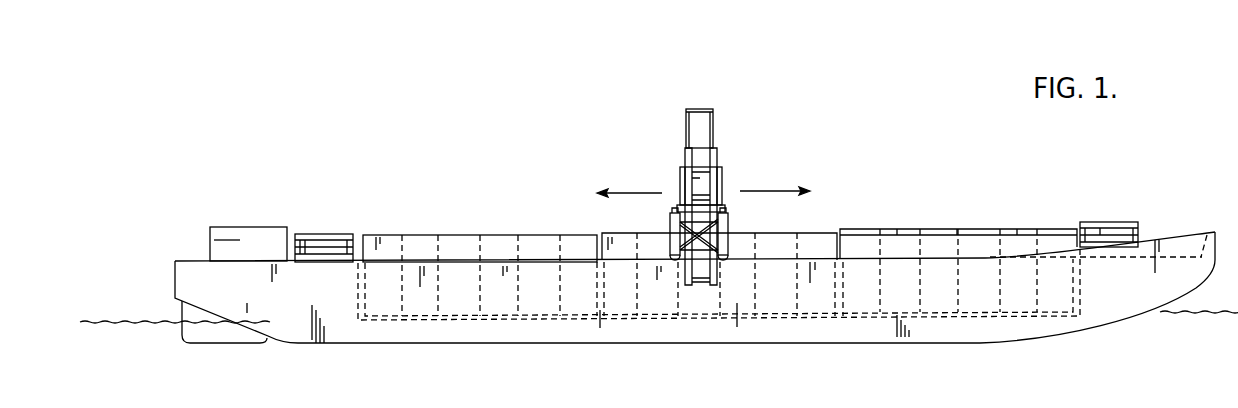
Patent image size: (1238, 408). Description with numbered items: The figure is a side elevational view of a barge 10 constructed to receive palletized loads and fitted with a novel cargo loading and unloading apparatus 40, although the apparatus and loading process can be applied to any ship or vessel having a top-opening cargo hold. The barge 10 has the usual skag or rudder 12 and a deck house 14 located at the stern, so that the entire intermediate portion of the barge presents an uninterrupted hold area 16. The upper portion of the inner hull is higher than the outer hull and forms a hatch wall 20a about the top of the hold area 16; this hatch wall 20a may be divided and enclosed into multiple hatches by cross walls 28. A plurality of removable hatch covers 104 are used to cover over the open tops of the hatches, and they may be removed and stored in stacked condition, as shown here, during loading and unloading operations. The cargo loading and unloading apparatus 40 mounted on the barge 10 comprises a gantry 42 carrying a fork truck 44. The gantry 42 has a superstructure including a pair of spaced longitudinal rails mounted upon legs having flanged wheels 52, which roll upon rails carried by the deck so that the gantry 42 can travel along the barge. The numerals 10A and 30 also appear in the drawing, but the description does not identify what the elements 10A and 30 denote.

The barge 10 is at (173, 245).
The skag or rudder 12 is at (193, 343).
The deck house 14 is at (238, 233).
The removable hatch covers 104 is at (327, 242).
The hatch wall 20a is at (425, 242).
The hatch cover 10A is at (967, 230).
The hold area 16 is at (422, 322).
The cross walls 28 is at (599, 313).
The cargo cells 30 is at (537, 312).
The cargo loading and unloading apparatus 40 is at (703, 195).
The fork truck 44 is at (718, 173).
The gantry 42 is at (727, 227).
The flanged wheels 52 is at (730, 254).